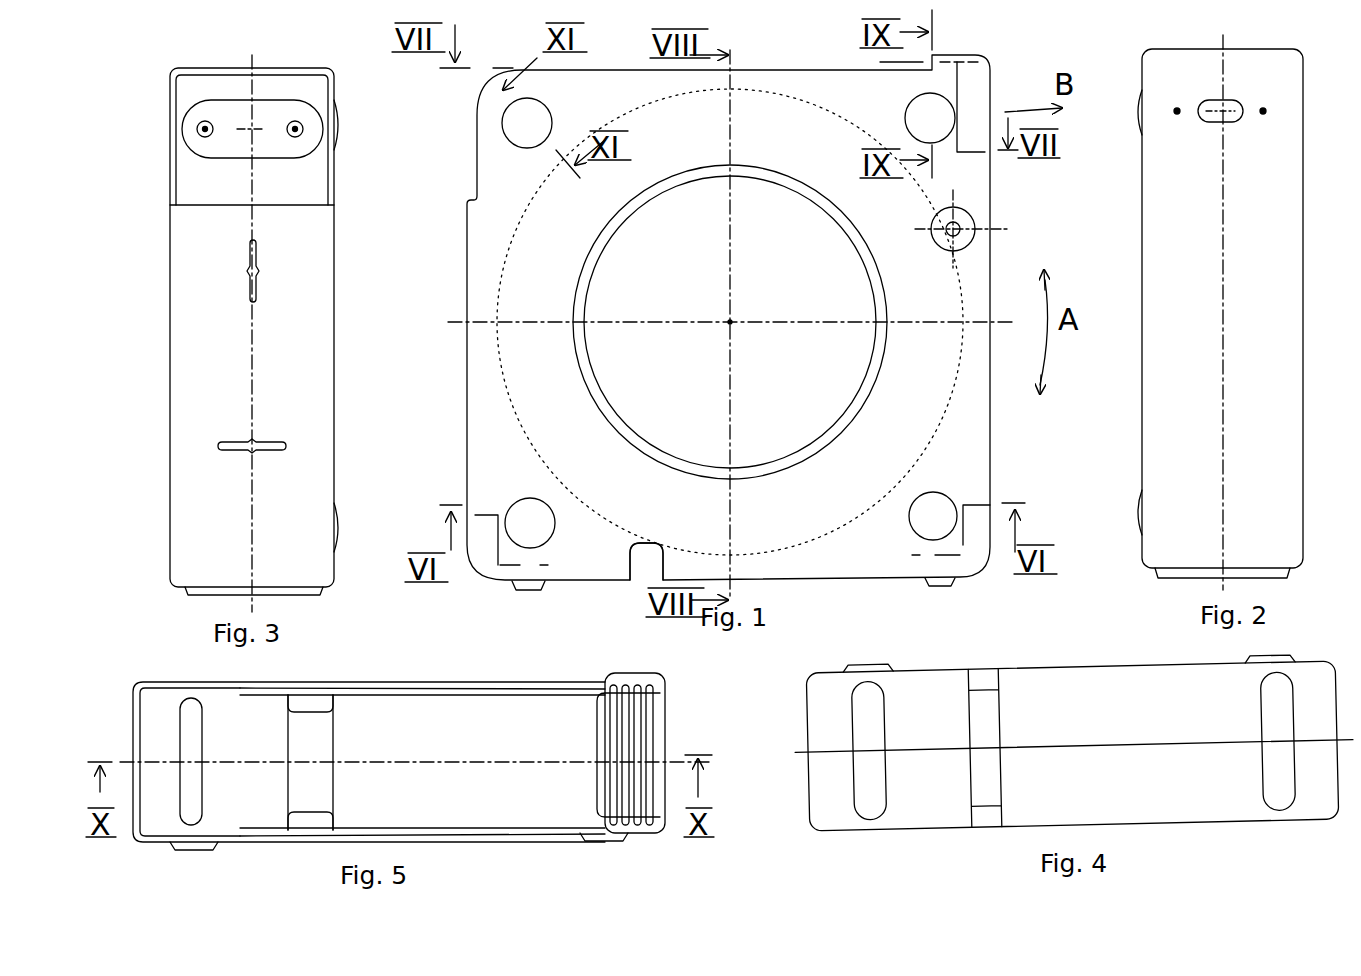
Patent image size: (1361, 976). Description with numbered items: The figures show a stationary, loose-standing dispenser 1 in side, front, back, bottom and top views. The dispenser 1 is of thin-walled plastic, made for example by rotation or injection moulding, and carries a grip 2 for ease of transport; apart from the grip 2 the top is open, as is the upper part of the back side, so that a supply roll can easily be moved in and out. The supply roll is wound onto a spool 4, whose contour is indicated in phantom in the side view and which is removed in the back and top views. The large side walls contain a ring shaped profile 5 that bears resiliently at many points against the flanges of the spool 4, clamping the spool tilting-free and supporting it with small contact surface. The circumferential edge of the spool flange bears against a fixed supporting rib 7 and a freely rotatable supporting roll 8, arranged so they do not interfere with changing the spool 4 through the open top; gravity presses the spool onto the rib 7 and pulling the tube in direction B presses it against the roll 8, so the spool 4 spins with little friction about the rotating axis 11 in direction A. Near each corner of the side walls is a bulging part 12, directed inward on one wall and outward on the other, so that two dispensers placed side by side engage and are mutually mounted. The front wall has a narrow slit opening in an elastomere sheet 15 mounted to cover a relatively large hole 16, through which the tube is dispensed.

In FIG. 1, the dispenser 1 is at (1117, 52).
In FIG. 1, the grip 2 is at (955, 62).
In FIG. 5, the grip 2 is at (652, 712).
In FIG. 1, the spool 4 is at (818, 540).
In FIG. 1, the ring shaped profile 5 is at (833, 440).
In FIG. 5, the ring shaped profile 5 is at (480, 690).
In FIG. 1, the supporting rib 7 is at (632, 548).
In FIG. 5, the supporting rib 7 is at (307, 703).
In FIG. 4, the supporting rib 7 is at (980, 675).
In FIG. 1, the supporting roll 8 is at (960, 222).
In FIG. 1, the rotating axis 11 is at (735, 320).
In FIG. 1, the bulging part 12 is at (511, 143).
In FIG. 3, the bulging part 12 is at (340, 140).
In FIG. 2, the bulging part 12 is at (1140, 312).
In FIG. 5, the bulging part 12 is at (192, 850).
In FIG. 4, the bulging part 12 is at (870, 660).
In FIG. 3, the elastomere sheet 15 is at (270, 99).
In FIG. 2, the hole 16 is at (1228, 100).